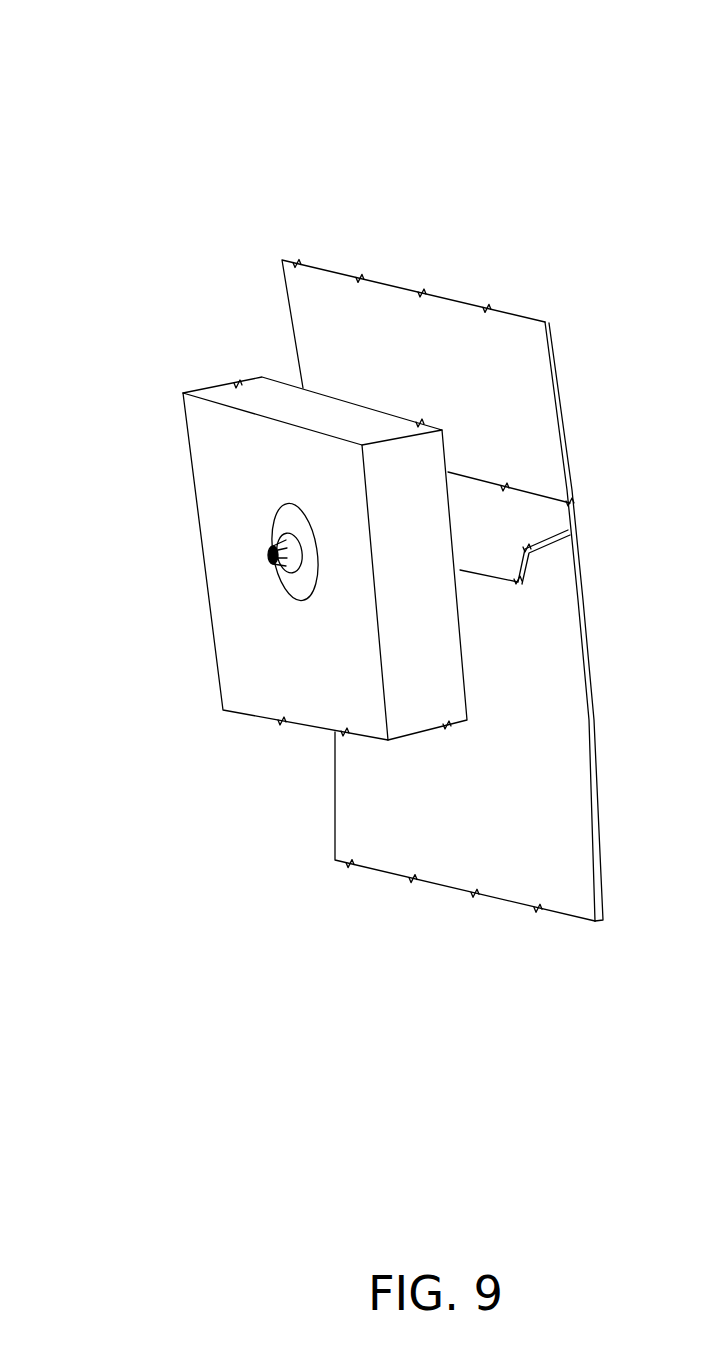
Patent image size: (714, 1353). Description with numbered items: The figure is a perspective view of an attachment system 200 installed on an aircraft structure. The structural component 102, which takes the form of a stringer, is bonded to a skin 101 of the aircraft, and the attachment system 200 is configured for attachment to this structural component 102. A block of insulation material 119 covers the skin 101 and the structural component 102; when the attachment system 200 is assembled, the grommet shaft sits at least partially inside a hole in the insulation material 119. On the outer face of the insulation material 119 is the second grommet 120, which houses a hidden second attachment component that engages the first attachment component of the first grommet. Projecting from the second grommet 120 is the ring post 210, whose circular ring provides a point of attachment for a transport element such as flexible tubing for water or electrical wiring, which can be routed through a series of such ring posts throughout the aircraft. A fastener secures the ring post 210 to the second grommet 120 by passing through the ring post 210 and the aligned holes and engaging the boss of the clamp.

The attachment system 200 is at (131, 79).
The skin 101 is at (543, 412).
The structural component 102 is at (490, 565).
The insulation material 119 is at (197, 453).
The second grommet 120 is at (285, 527).
The ring post 210 is at (282, 566).